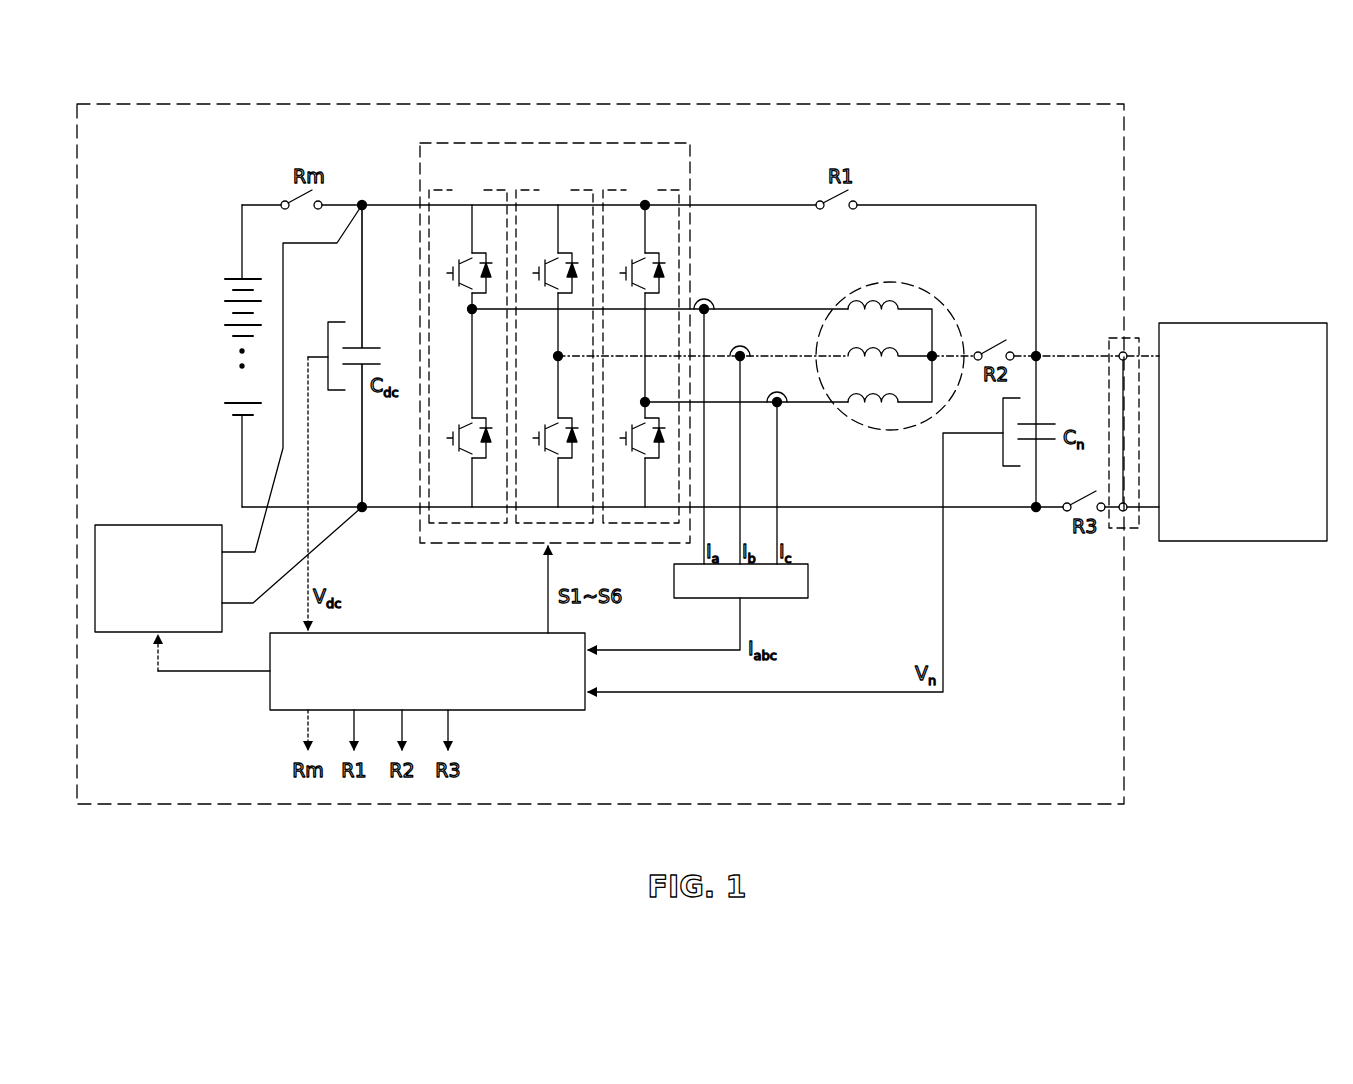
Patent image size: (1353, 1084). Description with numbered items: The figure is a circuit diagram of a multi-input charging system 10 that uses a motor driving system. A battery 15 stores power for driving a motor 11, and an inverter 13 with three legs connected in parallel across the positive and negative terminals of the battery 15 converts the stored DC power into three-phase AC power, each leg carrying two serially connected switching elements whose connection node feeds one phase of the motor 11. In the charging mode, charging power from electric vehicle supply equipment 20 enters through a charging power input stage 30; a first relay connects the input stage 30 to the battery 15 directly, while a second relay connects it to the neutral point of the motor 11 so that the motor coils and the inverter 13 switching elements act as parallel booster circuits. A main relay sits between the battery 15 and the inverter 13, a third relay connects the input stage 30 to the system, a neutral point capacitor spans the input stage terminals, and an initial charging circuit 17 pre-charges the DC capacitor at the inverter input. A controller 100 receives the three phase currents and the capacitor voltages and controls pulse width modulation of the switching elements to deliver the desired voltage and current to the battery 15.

The charging system 10 is at (1124, 178).
The motor 11 is at (893, 282).
The inverter 13 is at (690, 160).
The battery 15 is at (225, 362).
The initial charging circuit 17 is at (128, 525).
The electric vehicle supply equipment (EVSE) 20 is at (1242, 323).
The charging power input stage 30 is at (1132, 338).
The controller 100 is at (504, 710).